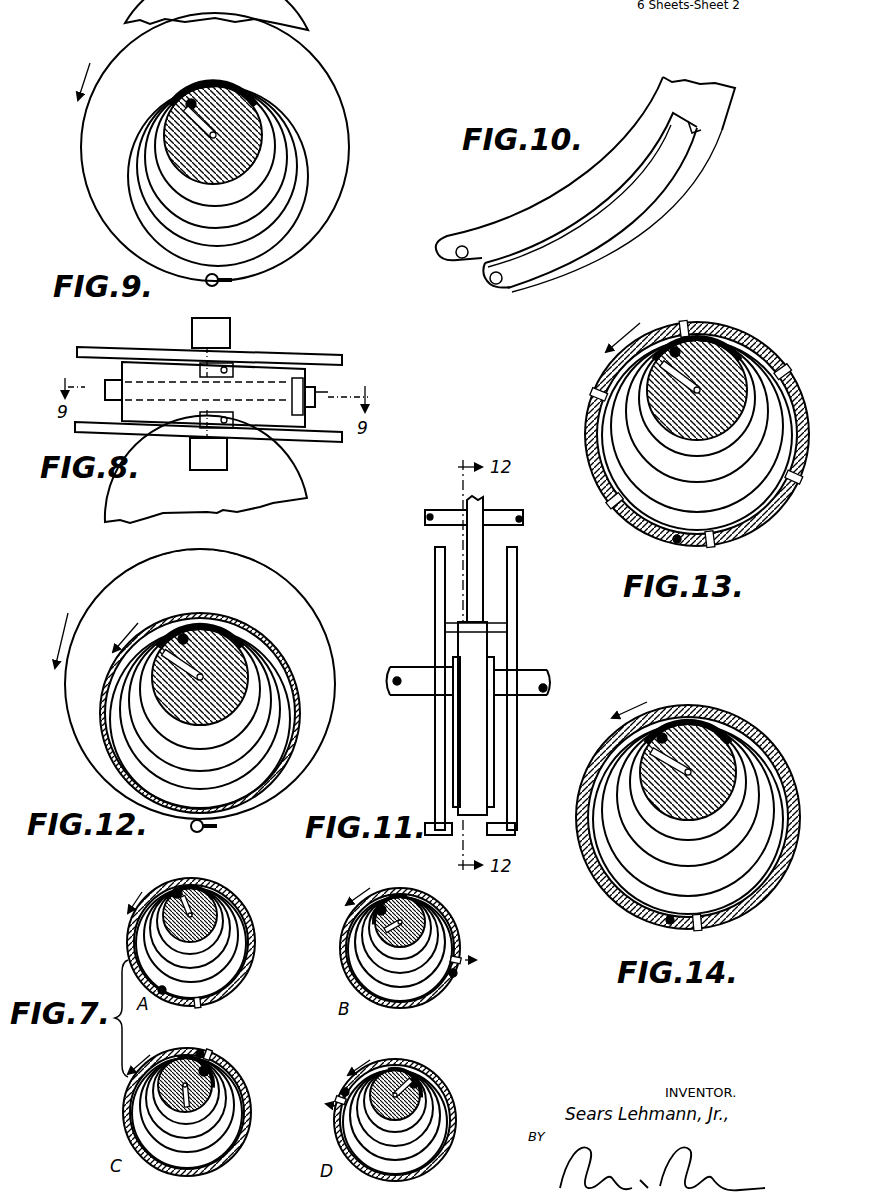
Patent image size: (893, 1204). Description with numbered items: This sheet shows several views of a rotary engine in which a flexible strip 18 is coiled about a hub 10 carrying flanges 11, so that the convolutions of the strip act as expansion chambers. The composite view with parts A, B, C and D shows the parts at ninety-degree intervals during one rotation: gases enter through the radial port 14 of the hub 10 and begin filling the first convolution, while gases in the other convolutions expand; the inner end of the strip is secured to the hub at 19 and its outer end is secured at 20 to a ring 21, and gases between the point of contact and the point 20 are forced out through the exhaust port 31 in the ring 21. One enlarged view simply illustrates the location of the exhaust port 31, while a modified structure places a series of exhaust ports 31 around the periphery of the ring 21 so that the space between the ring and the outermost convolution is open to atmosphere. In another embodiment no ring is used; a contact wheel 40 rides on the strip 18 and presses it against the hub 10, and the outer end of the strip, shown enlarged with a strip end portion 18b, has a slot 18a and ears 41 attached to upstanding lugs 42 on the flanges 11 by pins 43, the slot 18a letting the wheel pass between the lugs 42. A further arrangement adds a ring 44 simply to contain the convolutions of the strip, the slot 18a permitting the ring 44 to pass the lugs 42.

In FIG. 9, the hub 10 is at (205, 180).
In FIG. 13, the hub 10 is at (705, 432).
In FIG. 12, the hub 10 is at (200, 677).
In FIG. 14, the hub 10 is at (682, 821).
In FIG. 7, the hub 10 is at (222, 900).
In FIG. 9, the flanges 11 is at (93, 176).
In FIG. 12, the flanges 11 is at (332, 658).
In FIG. 11, the flanges 11 is at (517, 593).
In FIG. 9, the radial port 14 is at (187, 108).
In FIG. 13, the radial port 14 is at (675, 410).
In FIG. 12, the radial port 14 is at (182, 664).
In FIG. 14, the radial port 14 is at (666, 763).
In FIG. 7, the radial port 14 is at (180, 898).
In FIG. 9, the flexible strip 18 is at (300, 131).
In FIG. 10, the flexible strip 18 is at (725, 105).
In FIG. 8, the flexible strip 18 is at (147, 362).
In FIG. 13, the flexible strip 18 is at (697, 462).
In FIG. 12, the flexible strip 18 is at (200, 719).
In FIG. 11, the flexible strip 18 is at (497, 640).
In FIG. 14, the flexible strip 18 is at (688, 848).
In FIG. 7, the flexible strip 18 is at (152, 936).
In FIG. 10, the slot 18a is at (670, 183).
In FIG. 8, the slot 18a is at (243, 382).
In FIG. 11, the slot 18a is at (488, 726).
In FIG. 10, the notch of cam band 18b is at (698, 133).
In FIG. 9, the strip securing point 19 is at (183, 98).
In FIG. 13, the strip securing point 19 is at (700, 334).
In FIG. 12, the strip securing point 19 is at (200, 636).
In FIG. 14, the strip securing point 19 is at (672, 741).
In FIG. 7, the strip securing point 19 is at (212, 890).
In FIG. 13, the strip end securing point 20 is at (675, 540).
In FIG. 14, the strip end securing point 20 is at (668, 925).
In FIG. 7, the strip end securing point 20 is at (162, 996).
In FIG. 13, the ring 21 is at (772, 518).
In FIG. 14, the ring 21 is at (748, 730).
In FIG. 7, the ring 21 is at (247, 918).
In FIG. 13, the exhaust port 31 is at (682, 322).
In FIG. 14, the exhaust port 31 is at (702, 929).
In FIG. 7, the exhaust port 31 is at (188, 1004).
In FIG. 9, the contact wheel 40 is at (283, 60).
In FIG. 8, the contact wheel 40 is at (317, 392).
In FIG. 12, the contact wheel 40 is at (293, 533).
In FIG. 11, the contact wheel 40 is at (485, 541).
In FIG. 10, the ears 41 is at (458, 258).
In FIG. 12, the upstanding lugs 42 is at (210, 828).
In FIG. 8, the pins 43 is at (212, 350).
In FIG. 12, the ring 44 is at (108, 681).
In FIG. 11, the ring 44 is at (473, 752).